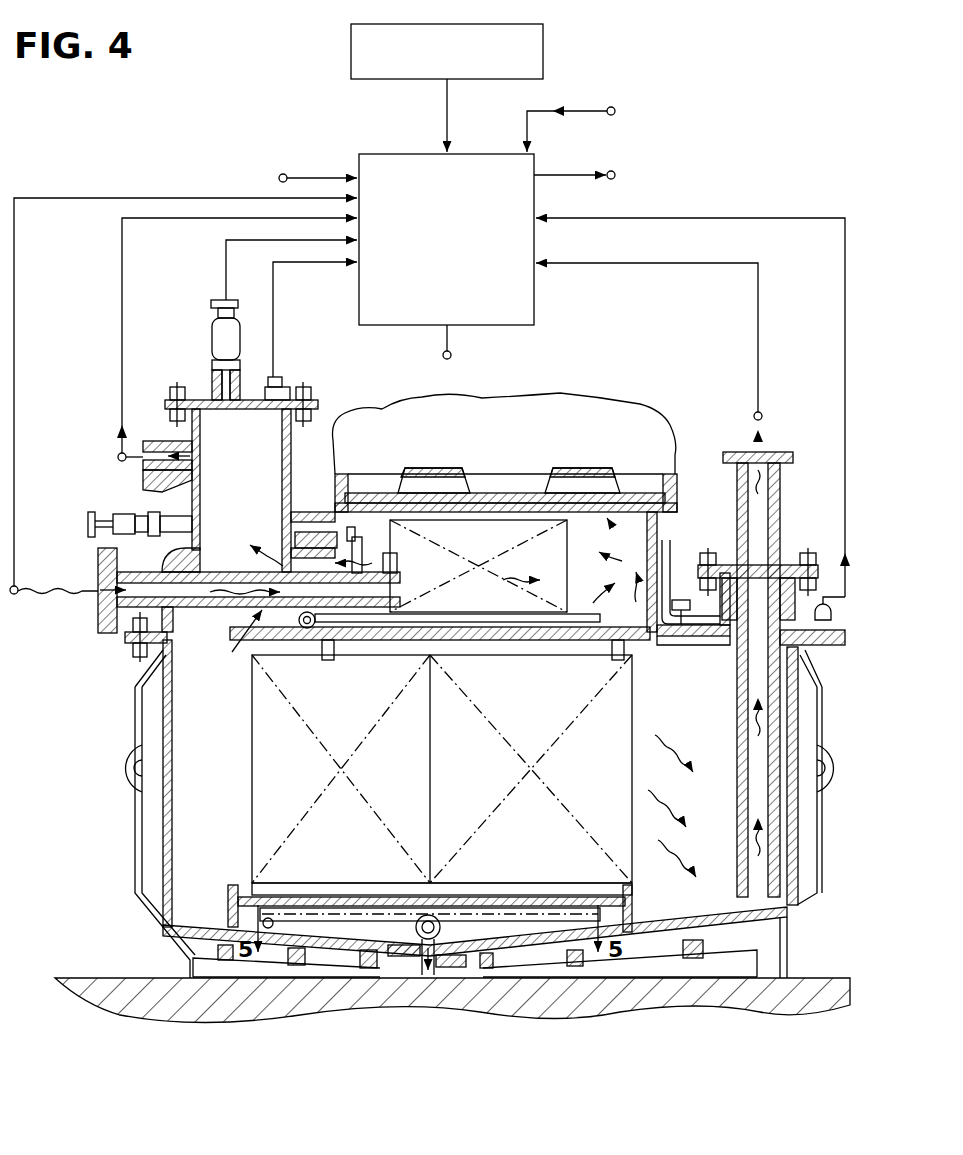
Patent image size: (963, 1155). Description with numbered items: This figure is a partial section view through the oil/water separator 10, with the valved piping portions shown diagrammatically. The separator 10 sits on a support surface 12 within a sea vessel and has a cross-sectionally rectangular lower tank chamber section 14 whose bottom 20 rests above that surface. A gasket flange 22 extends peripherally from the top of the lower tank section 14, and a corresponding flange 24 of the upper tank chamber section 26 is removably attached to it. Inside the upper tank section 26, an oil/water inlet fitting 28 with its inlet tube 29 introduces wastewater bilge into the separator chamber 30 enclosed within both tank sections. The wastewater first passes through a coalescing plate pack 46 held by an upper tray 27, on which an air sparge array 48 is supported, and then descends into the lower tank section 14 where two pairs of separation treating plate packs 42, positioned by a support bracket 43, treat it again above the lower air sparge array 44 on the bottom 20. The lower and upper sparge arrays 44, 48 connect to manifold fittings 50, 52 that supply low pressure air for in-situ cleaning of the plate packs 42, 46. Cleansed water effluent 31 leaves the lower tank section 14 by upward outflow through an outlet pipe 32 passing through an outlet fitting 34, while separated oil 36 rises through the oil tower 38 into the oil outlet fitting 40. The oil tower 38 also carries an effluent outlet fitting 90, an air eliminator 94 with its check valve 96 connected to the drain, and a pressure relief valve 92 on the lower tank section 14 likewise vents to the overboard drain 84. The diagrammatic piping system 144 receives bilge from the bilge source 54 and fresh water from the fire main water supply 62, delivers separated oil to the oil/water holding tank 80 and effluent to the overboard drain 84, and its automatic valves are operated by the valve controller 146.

The oil/water separator 10 is at (107, 878).
The support surface 12 is at (119, 976).
The lower tank chamber section 14 is at (163, 708).
The bottom 20 is at (664, 882).
The gasket flange 22 is at (134, 651).
The flange 24 is at (169, 642).
The upper tank chamber section 26 is at (678, 557).
The upper tray 27 is at (641, 528).
The oil/water inlet fitting 28 is at (95, 624).
The inlet tube 29 is at (268, 612).
The separator chamber 30 is at (643, 936).
The cleansed water effluent 31 is at (758, 666).
The outlet pipe 32 is at (778, 766).
The outlet fitting 34 is at (792, 559).
The separated oil 36 is at (256, 473).
The oil tower 38 is at (293, 462).
The oil outlet fitting 40 is at (143, 471).
The separation treating plate packs 42 is at (253, 806).
The support bracket 43 is at (237, 900).
The lower air sparge array 44 is at (358, 918).
The coalescing plate pack 46 is at (566, 556).
The air sparge array 48 is at (515, 623).
The manifold fitting 50 is at (449, 918).
The manifold fitting 52 is at (305, 629).
The bilge source 54 is at (285, 172).
The fire main water supply 62 is at (613, 107).
The oil/water holding tank 80 is at (613, 171).
The overboard drain 84 is at (452, 358).
The effluent outlet fitting 90 is at (292, 386).
The pressure relief valve 92 is at (834, 612).
The air eliminator 94 is at (209, 341).
The check valve 96 is at (245, 311).
The piping system 144 is at (521, 328).
The valve controller 146 is at (547, 41).